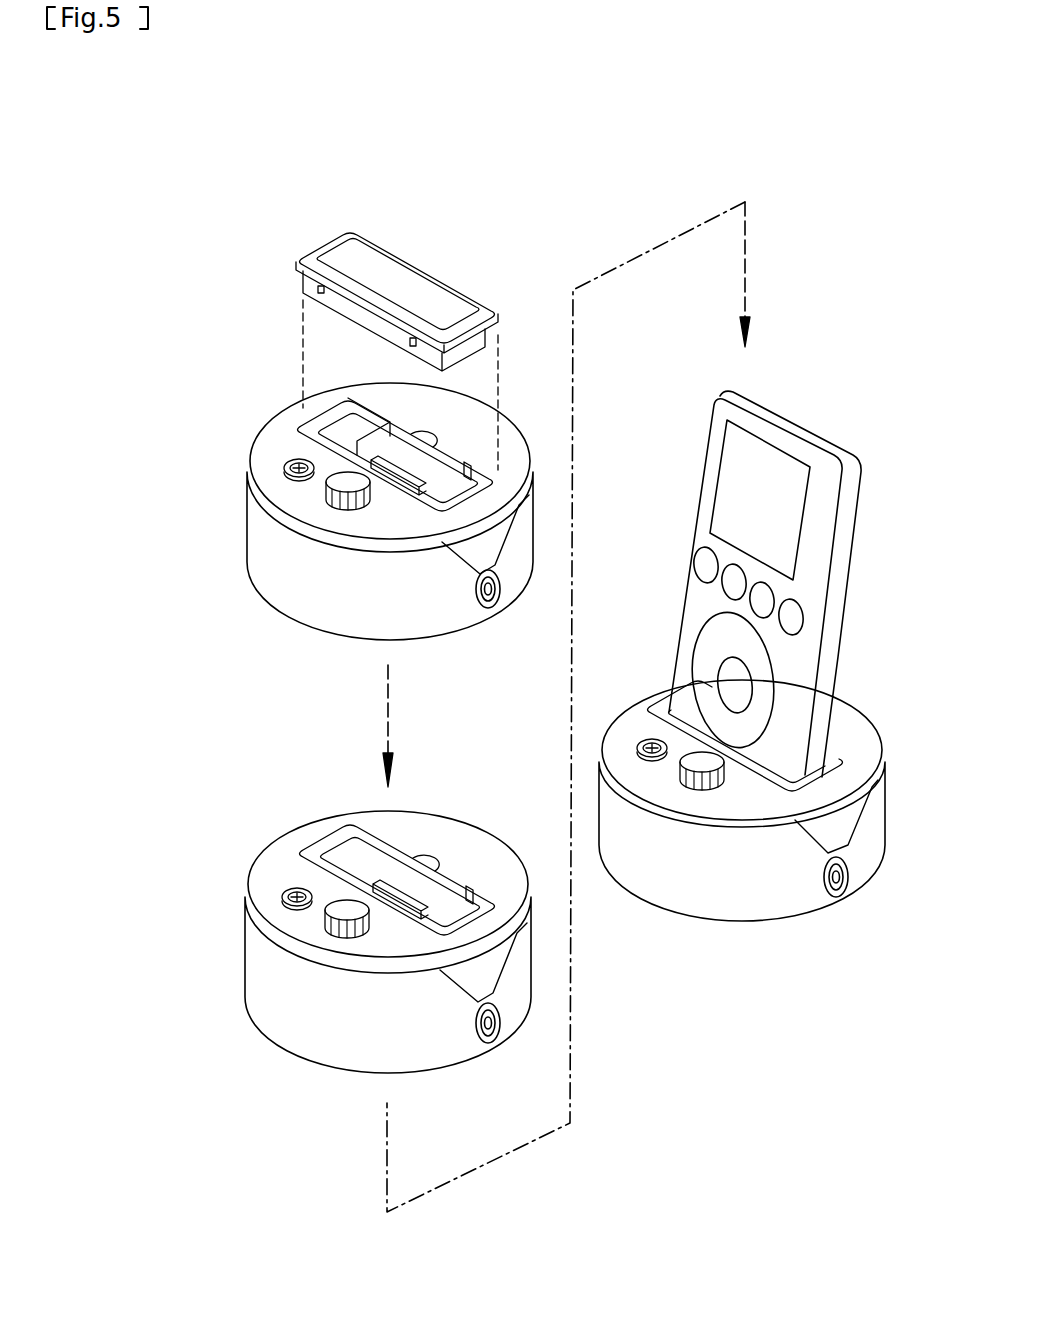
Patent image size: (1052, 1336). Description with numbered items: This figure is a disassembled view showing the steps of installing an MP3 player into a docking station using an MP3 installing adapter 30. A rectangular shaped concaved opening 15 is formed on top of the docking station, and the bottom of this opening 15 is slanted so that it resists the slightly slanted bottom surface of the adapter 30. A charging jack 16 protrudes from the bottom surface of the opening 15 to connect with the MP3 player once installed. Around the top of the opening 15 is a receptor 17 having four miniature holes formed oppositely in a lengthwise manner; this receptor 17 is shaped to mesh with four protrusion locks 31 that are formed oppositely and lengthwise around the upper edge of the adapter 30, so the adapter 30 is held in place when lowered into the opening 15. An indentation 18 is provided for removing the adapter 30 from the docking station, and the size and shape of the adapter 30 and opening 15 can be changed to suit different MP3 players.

The rectangular shaped concaved opening 15 is at (340, 427).
The charging jack 16 is at (340, 505).
The receptor 17 is at (378, 418).
The indentation 18 is at (433, 430).
The MP3 installing adapter 30 is at (382, 277).
The protrusion locks 31 is at (322, 290).